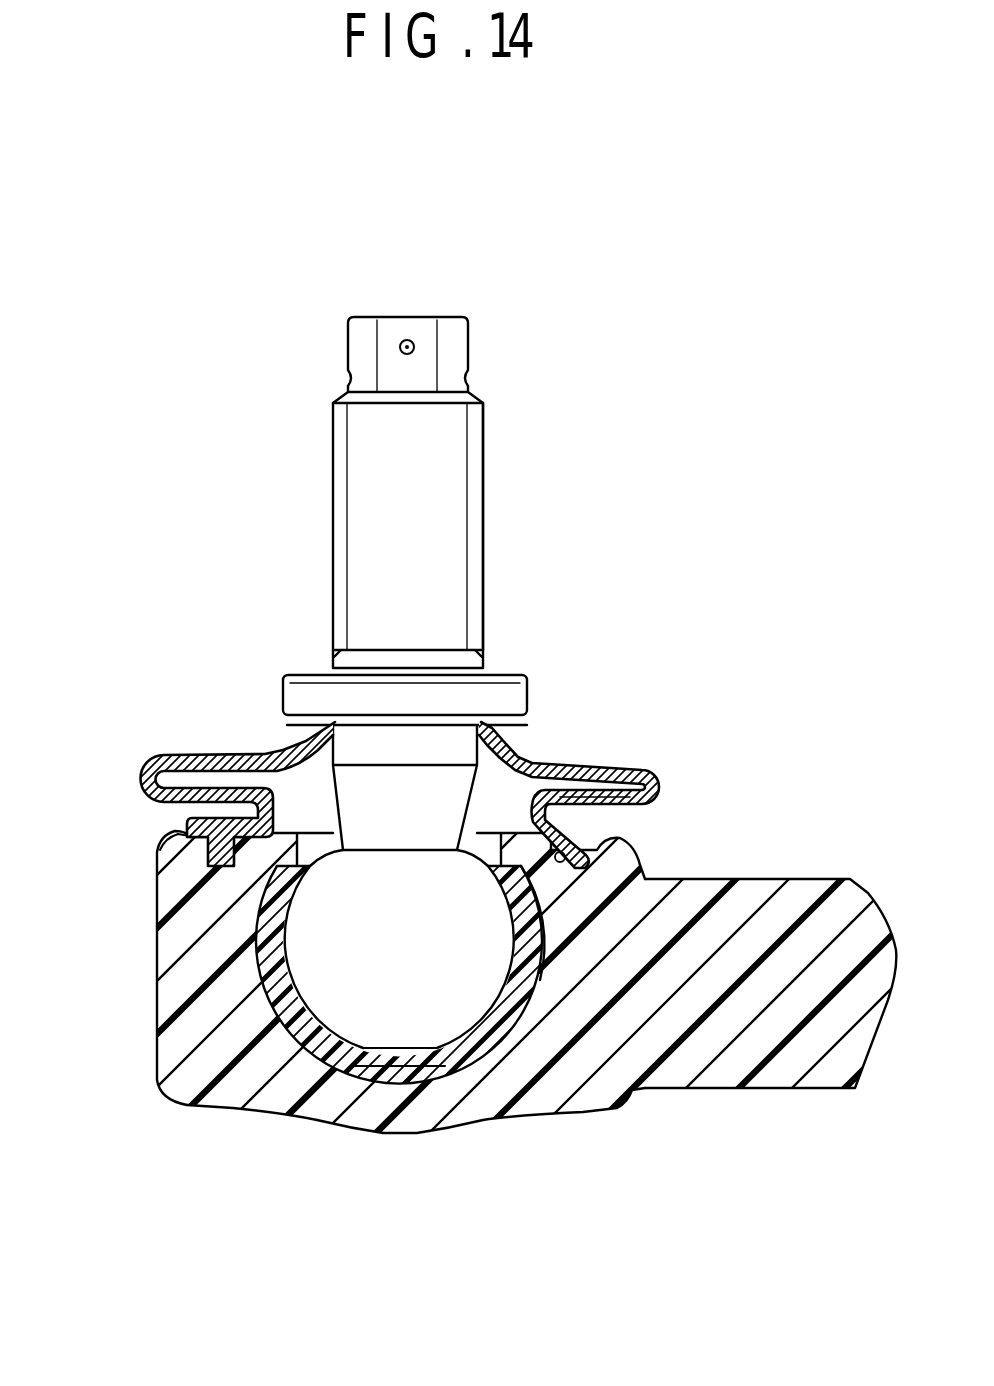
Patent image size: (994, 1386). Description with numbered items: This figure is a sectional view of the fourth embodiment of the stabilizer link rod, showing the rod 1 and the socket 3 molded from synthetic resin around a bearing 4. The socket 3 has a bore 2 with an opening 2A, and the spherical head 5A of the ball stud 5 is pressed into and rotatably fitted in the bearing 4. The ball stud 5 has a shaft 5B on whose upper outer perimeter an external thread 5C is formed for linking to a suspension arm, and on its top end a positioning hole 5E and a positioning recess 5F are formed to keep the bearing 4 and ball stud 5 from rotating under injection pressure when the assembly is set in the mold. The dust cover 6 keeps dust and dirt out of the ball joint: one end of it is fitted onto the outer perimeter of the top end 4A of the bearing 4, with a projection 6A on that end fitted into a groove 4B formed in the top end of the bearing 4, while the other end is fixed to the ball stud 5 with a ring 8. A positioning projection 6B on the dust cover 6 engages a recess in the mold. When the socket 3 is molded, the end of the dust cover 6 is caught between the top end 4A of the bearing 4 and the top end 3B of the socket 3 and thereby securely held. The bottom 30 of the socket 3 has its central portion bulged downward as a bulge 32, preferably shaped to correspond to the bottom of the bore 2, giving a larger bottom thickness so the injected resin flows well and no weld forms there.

The rod 1 is at (793, 1062).
The bore 2 is at (298, 1015).
The opening 2A is at (300, 843).
The socket 3 is at (172, 988).
The top end of the socket 3B is at (182, 862).
The bearing 4 is at (267, 973).
The top end of the bearing 4A is at (575, 935).
The groove 4B is at (562, 852).
The ball stud 5 is at (422, 735).
The spherical head 5A is at (415, 1005).
The shaft 5B is at (367, 508).
The external thread 5C is at (483, 510).
The positioning hole 5E is at (410, 340).
The positioning recess 5F is at (466, 380).
The dust cover 6 is at (419, 940).
The projection 6A is at (597, 885).
The positioning projection 6B is at (590, 838).
The ring 8 is at (480, 697).
The bottom 30 is at (372, 1110).
The bulge 32 is at (392, 1135).